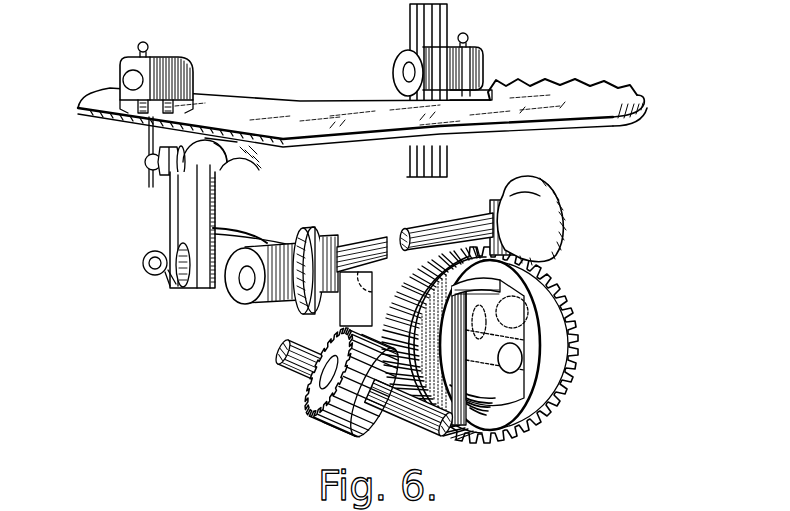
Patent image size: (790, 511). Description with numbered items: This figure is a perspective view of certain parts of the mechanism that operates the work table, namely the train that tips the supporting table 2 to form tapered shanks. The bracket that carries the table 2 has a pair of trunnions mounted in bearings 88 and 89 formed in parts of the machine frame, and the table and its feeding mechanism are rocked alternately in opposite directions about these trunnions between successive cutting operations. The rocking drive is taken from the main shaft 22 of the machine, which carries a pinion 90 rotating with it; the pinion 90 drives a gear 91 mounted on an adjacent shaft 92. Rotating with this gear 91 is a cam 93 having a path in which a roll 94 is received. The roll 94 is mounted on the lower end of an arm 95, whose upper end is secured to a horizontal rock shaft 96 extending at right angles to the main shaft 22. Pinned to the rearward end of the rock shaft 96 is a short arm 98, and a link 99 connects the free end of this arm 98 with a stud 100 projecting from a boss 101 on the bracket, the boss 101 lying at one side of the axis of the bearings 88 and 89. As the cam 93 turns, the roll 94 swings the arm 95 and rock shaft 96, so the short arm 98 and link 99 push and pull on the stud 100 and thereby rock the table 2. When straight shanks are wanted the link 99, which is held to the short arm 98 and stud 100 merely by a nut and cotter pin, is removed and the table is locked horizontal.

The supporting table 2 is at (287, 117).
The bearing 88 is at (192, 72).
The bearing 89 is at (407, 53).
The stud 100 is at (146, 163).
The boss 101 is at (255, 154).
The link 99 is at (172, 218).
The short arm 98 is at (222, 283).
The cam 93 is at (400, 262).
The rock shaft 96 is at (450, 227).
The arm 95 is at (558, 226).
The roll 94 is at (528, 310).
The gear 91 is at (552, 334).
The shaft 92 is at (522, 364).
The main shaft 22 is at (290, 372).
The pinion 90 is at (337, 423).